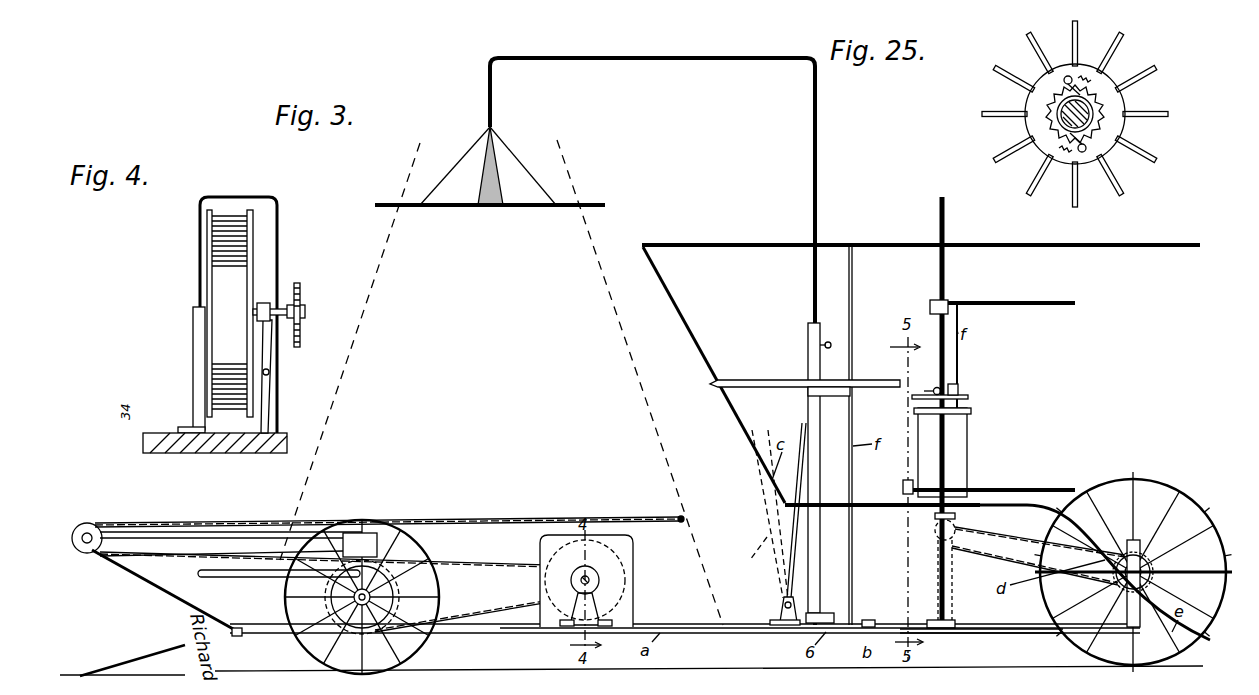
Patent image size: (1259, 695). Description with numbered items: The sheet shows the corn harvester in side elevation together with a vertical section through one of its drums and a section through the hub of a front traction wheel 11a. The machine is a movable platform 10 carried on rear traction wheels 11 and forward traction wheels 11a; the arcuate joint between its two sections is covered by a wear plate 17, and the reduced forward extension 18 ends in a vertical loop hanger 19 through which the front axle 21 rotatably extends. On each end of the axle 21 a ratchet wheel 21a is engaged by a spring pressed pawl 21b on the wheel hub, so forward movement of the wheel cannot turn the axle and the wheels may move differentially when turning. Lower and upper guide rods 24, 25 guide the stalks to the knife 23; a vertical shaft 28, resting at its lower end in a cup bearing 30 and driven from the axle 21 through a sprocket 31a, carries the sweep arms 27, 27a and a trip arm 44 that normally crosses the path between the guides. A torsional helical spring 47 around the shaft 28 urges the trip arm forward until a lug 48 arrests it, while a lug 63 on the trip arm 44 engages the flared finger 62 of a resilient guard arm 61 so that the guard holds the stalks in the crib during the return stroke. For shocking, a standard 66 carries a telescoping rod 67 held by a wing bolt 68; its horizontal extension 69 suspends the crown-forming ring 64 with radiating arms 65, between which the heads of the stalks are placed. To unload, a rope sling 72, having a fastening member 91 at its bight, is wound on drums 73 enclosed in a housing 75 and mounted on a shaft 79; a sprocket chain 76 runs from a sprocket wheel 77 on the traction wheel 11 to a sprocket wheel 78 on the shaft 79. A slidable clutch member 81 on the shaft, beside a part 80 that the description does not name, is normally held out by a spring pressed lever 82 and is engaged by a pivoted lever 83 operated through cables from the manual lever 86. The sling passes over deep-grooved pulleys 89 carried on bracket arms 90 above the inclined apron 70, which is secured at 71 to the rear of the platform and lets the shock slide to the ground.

In FIG. 3, the horizontal extension 69 is at (691, 60).
In FIG. 3, the vertically adjustable rod 67 is at (818, 163).
In FIG. 3, the standard 66 is at (808, 347).
In FIG. 3, the wing bolt 68 is at (832, 343).
In FIG. 3, the radiating arms 65 is at (520, 162).
In FIG. 3, the ring or annulus 64 is at (540, 210).
In FIG. 3, the upper guide rods 25 is at (1088, 228).
In FIG. 3, the lower guide rods 24 is at (900, 508).
In FIG. 3, the resilient guard arm 61 is at (870, 377).
In FIG. 3, the finger or projection 62 is at (848, 392).
In FIG. 3, the vertical shaft 28 is at (946, 215).
In FIG. 3, the sweep arm 27a is at (1025, 298).
In FIG. 3, the lug 48 is at (968, 408).
In FIG. 3, the trip arm 44 is at (968, 397).
In FIG. 3, the torsional helical spring 47 is at (958, 389).
In FIG. 3, the lug 63 is at (940, 389).
In FIG. 3, the sweep arm 27 is at (1013, 487).
In FIG. 3, the knife 23 is at (935, 628).
In FIG. 3, the wear plate 17 is at (868, 620).
In FIG. 3, the manually operated lever 86 is at (790, 568).
In FIG. 3, the deep-grooved pulleys 89 is at (95, 523).
In FIG. 3, the bracket arms 90 is at (185, 539).
In FIG. 3, the rope sling 72 is at (640, 517).
In FIG. 3, the fastening member 91 is at (683, 516).
In FIG. 3, the apron 70 is at (168, 650).
In FIG. 3, the apron securing point 71 is at (236, 636).
In FIG. 3, the rear traction wheels 11 is at (308, 638).
In FIG. 3, the sprocket wheel 77 is at (395, 585).
In FIG. 3, the sprocket chains 76 is at (510, 570).
In FIG. 3, the drums 73 is at (634, 580).
In FIG. 4, the drums 73 is at (228, 273).
In FIG. 3, the sprocket wheel 78 is at (600, 578).
In FIG. 4, the sprocket wheel 78 is at (301, 285).
In FIG. 3, the shaft 79 is at (588, 578).
In FIG. 4, the shaft 79 is at (305, 310).
In FIG. 3, the platform 10 is at (640, 624).
In FIG. 3, the forward traction wheels 11a is at (1196, 503).
In FIG. 25, the forward traction wheels 11a is at (1118, 44).
In FIG. 3, the vertical loop hanger 19 is at (1137, 540).
In FIG. 3, the front axle 21 is at (1150, 566).
In FIG. 25, the front axle 21 is at (1092, 110).
In FIG. 3, the cup bearing 30 is at (1040, 532).
In FIG. 3, the sprocket 31a is at (1110, 550).
In FIG. 3, the reduced extension 18 is at (1020, 634).
In FIG. 4, the housing 75 is at (279, 213).
In FIG. 4, the hub 80 is at (268, 303).
In FIG. 4, the slidable clutch member 81 is at (250, 318).
In FIG. 4, the spring pressed lever 82 is at (272, 393).
In FIG. 4, the lever 83 is at (250, 453).
In FIG. 25, the spring pressed pawl 21b is at (1064, 78).
In FIG. 25, the ratchet wheel 21a is at (1060, 122).